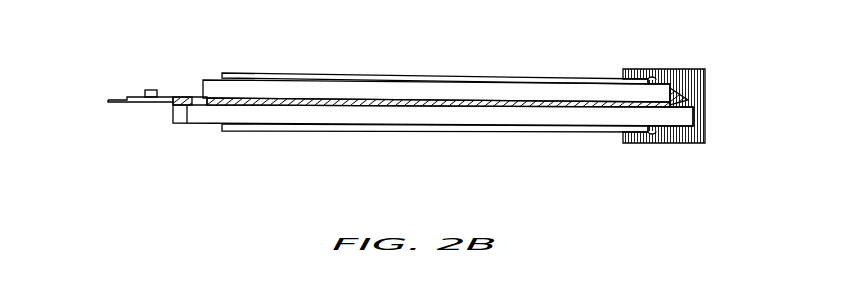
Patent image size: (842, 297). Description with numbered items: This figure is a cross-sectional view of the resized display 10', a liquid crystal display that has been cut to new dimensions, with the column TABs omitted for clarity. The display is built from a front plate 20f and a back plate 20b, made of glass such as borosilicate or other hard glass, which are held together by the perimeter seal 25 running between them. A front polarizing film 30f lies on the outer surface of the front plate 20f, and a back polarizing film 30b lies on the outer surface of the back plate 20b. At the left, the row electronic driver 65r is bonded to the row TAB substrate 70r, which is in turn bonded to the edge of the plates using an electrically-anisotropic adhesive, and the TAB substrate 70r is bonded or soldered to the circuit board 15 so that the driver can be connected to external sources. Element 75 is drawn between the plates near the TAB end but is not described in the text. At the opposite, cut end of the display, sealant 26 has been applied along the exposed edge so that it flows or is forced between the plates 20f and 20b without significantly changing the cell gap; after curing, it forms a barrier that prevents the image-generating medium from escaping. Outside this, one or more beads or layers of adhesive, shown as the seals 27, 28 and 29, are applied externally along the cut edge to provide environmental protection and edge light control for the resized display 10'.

The resized display 10' is at (406, 71).
The circuit board 15 is at (113, 99).
The row electronic driver 65r is at (150, 89).
The row TAB substrate 70r is at (170, 101).
The back plate 20b is at (173, 124).
The divider plate 75 is at (186, 124).
The back polarizing film 30b is at (240, 132).
The front plate 20f is at (204, 80).
The front polarizing film 30f is at (257, 73).
The perimeter seal 25 is at (533, 106).
The seal 27 is at (688, 100).
The seal 28 is at (696, 80).
The seal 29 is at (655, 78).
The sealant 26 is at (659, 107).